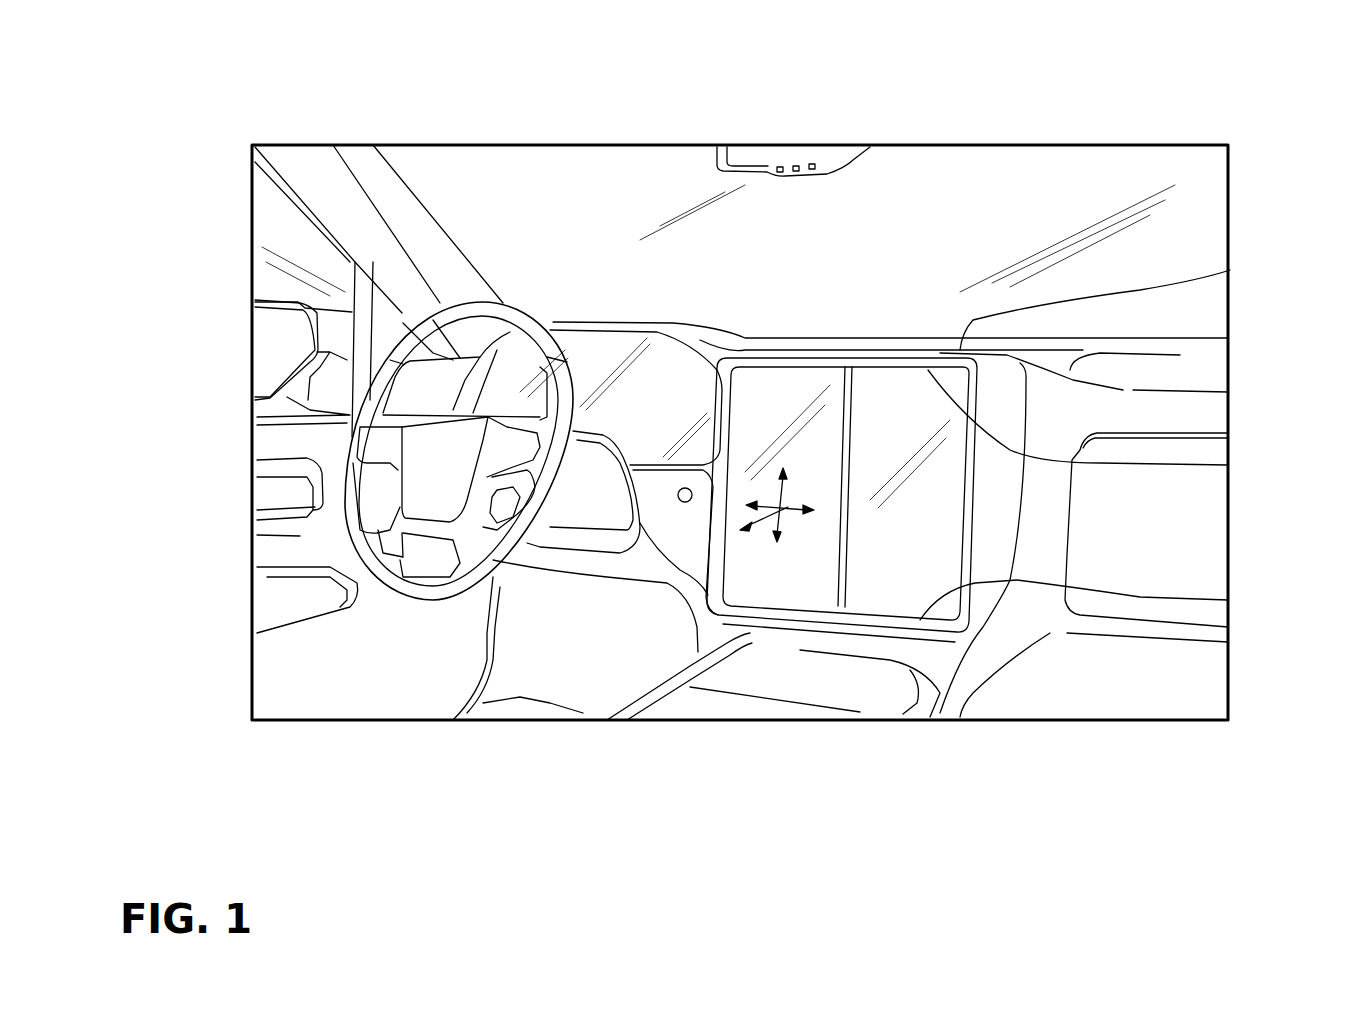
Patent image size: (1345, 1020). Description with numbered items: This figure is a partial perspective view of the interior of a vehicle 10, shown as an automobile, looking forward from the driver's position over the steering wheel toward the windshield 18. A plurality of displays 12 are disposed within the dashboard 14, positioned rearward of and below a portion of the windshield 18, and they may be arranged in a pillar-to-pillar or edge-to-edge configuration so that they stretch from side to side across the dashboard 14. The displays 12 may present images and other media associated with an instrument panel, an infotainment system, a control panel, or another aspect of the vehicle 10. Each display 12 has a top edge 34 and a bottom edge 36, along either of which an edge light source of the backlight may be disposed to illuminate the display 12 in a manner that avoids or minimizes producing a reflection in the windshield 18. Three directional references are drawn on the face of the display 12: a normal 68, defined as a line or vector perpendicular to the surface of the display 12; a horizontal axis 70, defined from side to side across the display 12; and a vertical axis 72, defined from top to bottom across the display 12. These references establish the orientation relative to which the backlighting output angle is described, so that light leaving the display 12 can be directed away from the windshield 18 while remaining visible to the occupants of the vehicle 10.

The vehicle 10 is at (1116, 106).
The display 12 is at (587, 343).
The dashboard 14 is at (1230, 270).
The windshield 18 is at (1008, 210).
The top edge 34 is at (1228, 465).
The bottom edge 36 is at (1228, 600).
The normal 68 is at (755, 523).
The horizontal axis 70 is at (792, 513).
The vertical axis 72 is at (783, 488).